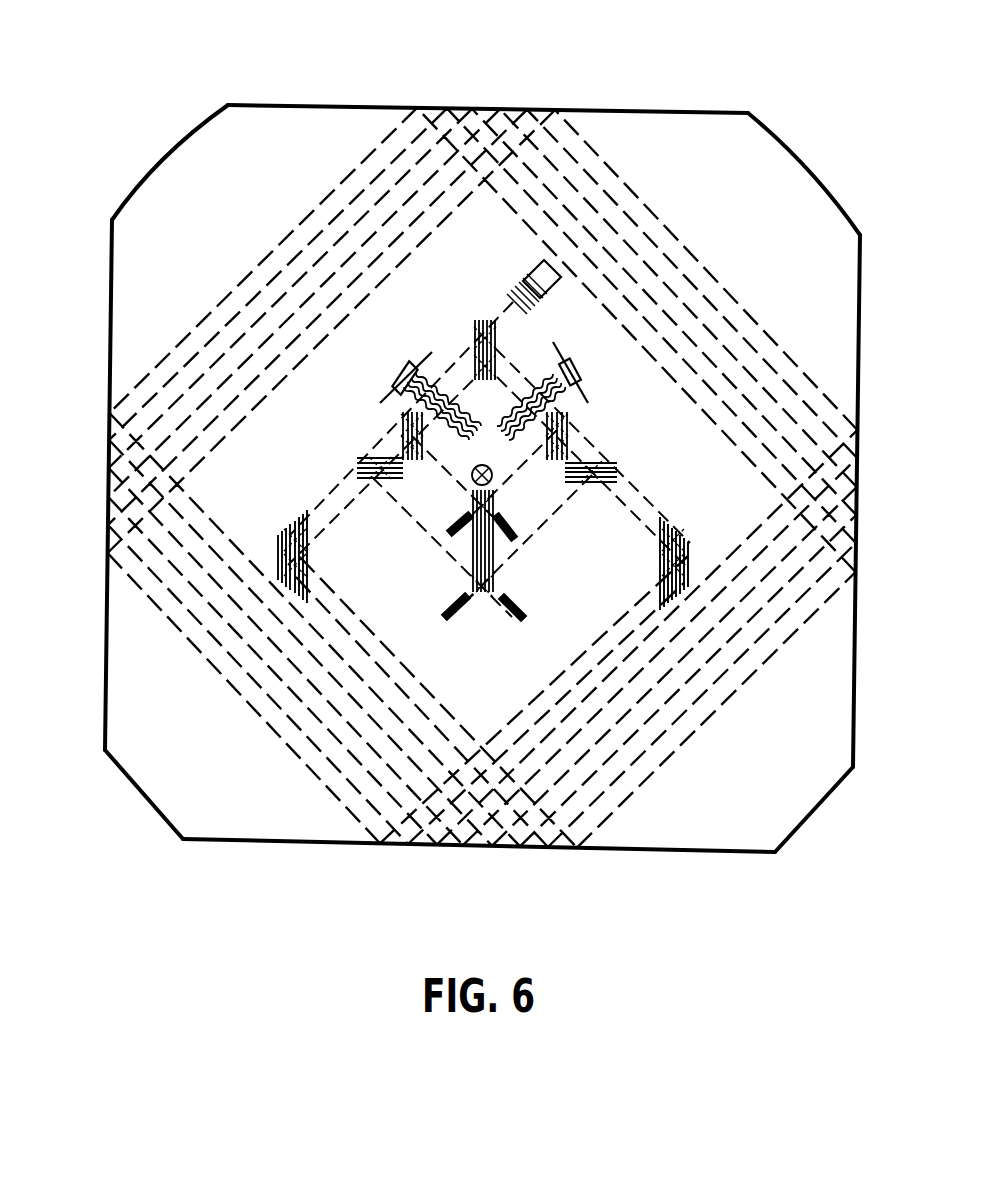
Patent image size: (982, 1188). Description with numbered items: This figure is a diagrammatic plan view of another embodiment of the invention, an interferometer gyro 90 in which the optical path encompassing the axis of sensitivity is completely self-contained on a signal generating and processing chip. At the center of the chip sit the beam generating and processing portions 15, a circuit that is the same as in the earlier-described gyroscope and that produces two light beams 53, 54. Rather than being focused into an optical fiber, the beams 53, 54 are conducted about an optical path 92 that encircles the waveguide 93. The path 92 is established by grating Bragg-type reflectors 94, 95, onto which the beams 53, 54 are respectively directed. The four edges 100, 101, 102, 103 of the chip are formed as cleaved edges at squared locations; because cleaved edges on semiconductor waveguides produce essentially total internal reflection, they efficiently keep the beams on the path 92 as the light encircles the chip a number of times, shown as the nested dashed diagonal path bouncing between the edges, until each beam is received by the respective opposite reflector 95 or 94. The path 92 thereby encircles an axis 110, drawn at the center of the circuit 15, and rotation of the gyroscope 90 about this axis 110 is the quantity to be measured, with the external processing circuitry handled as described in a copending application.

The gyro 90 is at (156, 74).
The optical path 92 is at (214, 264).
The waveguide 93 is at (140, 186).
The edge 100 is at (107, 652).
The edge 101 is at (330, 106).
The edge 102 is at (858, 356).
The edge 103 is at (660, 853).
The beam generating and processing portions 15 is at (449, 327).
The axis 110 is at (484, 465).
The beam 53 is at (638, 500).
The beam 54 is at (333, 495).
The grating Bragg-type reflector 94 is at (680, 537).
The grating Bragg-type reflector 95 is at (284, 530).